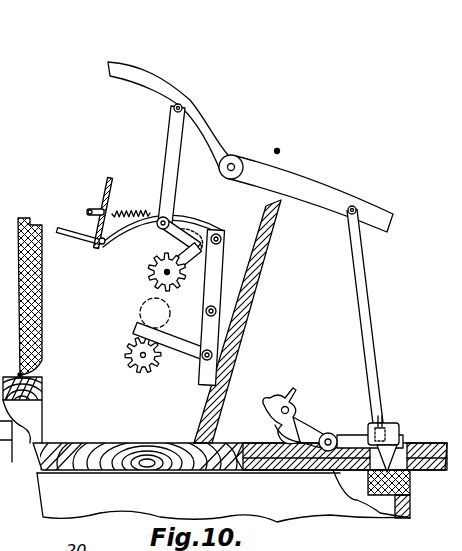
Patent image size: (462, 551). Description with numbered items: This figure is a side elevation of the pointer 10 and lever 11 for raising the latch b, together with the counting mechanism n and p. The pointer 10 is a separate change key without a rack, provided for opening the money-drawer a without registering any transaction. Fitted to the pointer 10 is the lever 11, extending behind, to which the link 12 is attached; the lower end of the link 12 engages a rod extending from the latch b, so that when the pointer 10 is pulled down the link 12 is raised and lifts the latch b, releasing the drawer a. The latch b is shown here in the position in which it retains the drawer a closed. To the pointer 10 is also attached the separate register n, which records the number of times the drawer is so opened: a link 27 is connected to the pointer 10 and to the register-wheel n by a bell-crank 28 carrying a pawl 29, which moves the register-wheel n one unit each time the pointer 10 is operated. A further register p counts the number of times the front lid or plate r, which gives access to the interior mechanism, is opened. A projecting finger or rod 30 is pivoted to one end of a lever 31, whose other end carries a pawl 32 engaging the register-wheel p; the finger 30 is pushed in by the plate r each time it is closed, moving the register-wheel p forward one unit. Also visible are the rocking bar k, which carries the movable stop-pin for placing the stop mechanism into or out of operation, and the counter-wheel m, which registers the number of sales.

The pointer 10 is at (163, 118).
The lever 11 is at (306, 193).
The link 12 is at (377, 315).
The link 27 is at (182, 164).
The bell-crank 28 is at (173, 246).
The pawl 29 is at (188, 232).
The projecting finger or rod 30 is at (139, 224).
The lever 31 is at (223, 308).
The pawl 32 is at (171, 341).
The rocking bar k is at (285, 152).
The register n is at (160, 272).
The register m is at (155, 313).
The register p is at (101, 375).
The front lid or plate r is at (27, 340).
The latch b is at (377, 444).
The money-drawer a is at (240, 468).